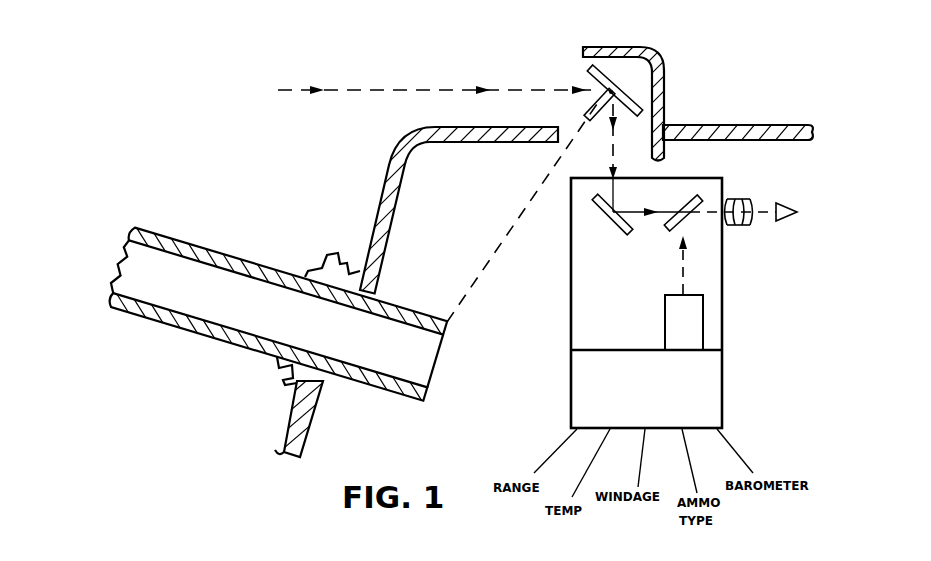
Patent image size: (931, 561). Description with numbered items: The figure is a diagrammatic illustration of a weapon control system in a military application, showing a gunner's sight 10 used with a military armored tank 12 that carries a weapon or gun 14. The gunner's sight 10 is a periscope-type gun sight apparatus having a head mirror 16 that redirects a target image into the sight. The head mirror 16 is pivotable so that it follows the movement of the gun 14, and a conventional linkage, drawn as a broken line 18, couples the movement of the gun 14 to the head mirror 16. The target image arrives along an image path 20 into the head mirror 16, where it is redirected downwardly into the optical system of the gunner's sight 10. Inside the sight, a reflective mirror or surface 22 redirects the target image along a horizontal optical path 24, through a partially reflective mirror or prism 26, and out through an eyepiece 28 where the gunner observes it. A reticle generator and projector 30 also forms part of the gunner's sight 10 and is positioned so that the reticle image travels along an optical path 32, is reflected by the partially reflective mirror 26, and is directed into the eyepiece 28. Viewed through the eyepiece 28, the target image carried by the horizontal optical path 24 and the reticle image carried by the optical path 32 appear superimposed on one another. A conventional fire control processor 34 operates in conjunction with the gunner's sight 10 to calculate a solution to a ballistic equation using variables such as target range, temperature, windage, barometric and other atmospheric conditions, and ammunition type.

The gunner's sight 10 is at (755, 317).
The military armored tank 12 is at (770, 126).
The gun 14 is at (243, 255).
The head mirror 16 is at (626, 96).
The linkage 18 is at (507, 243).
The image path 20 is at (430, 90).
The reflective mirror 22 is at (613, 223).
The horizontal optical path 24 is at (652, 210).
The partially reflective mirror 26 is at (690, 196).
The eyepiece 28 is at (740, 228).
The reticle generator and projector 30 is at (697, 313).
The optical path 32 is at (680, 262).
The fire control processor 34 is at (713, 380).